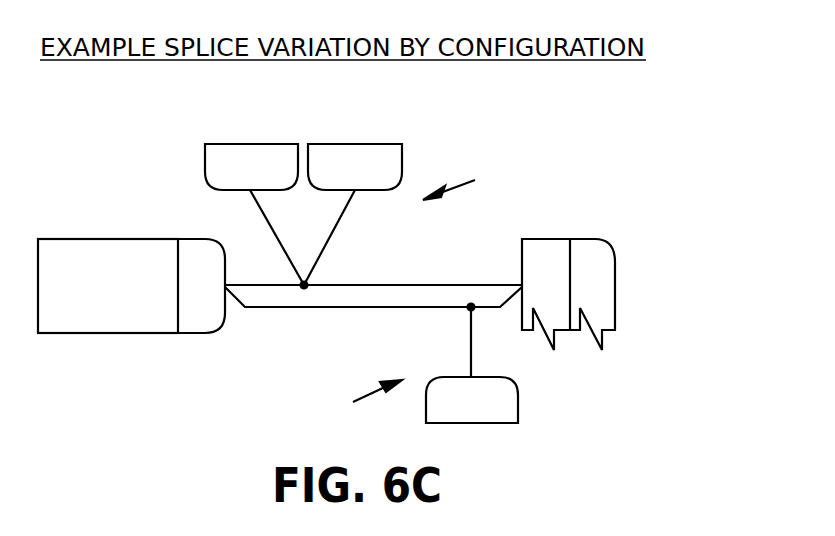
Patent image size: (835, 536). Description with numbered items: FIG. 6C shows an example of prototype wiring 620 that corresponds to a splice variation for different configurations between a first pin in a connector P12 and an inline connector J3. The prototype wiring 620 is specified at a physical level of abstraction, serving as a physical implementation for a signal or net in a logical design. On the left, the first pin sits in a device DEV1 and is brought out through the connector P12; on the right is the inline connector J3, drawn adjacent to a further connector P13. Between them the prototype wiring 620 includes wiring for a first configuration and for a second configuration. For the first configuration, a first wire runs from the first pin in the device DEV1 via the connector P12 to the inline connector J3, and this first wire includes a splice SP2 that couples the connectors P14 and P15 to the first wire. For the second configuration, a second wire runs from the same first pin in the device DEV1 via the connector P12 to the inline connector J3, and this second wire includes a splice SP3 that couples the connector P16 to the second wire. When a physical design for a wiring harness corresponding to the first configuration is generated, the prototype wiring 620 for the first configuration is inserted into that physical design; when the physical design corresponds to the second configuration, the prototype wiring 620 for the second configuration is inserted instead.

The prototype wiring 620 is at (753, 115).
The device DEV1 is at (108, 306).
The connector P12 is at (209, 305).
The splice SP2 is at (299, 239).
The connector P14 is at (251, 167).
The connector P15 is at (355, 167).
The splice SP3 is at (442, 341).
The connector P16 is at (472, 400).
The inline connector J3 is at (546, 310).
The connector P13 is at (616, 298).